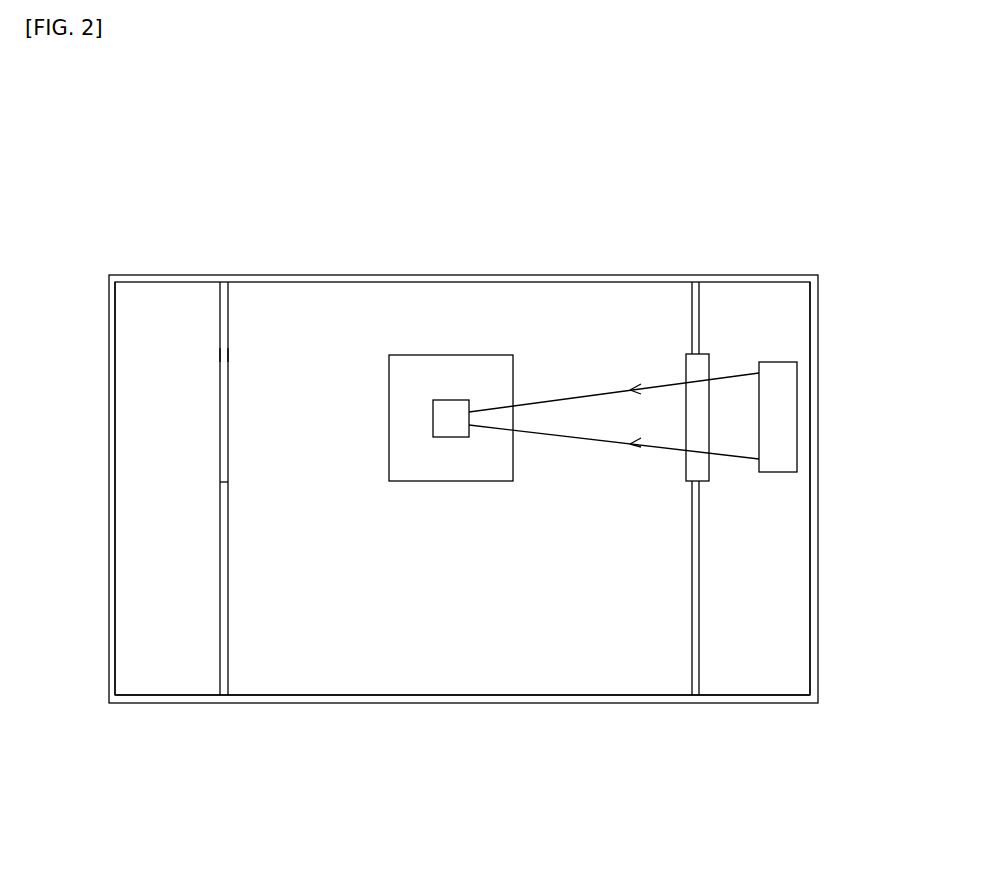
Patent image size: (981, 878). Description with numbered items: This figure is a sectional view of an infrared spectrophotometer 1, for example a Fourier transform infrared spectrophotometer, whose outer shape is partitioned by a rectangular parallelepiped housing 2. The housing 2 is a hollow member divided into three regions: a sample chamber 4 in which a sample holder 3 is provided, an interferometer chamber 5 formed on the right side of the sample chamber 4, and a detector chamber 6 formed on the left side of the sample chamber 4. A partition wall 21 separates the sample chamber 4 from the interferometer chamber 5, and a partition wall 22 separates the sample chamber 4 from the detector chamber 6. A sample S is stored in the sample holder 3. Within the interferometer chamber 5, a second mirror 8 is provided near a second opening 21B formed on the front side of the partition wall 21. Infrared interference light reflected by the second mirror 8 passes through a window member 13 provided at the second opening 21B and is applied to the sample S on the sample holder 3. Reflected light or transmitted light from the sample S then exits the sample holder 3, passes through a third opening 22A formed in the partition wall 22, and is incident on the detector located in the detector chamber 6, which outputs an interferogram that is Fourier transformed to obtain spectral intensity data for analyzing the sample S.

The infrared spectrophotometer 1 is at (463, 448).
The housing 2 is at (415, 275).
The sample holder 3 is at (478, 481).
The sample S is at (437, 437).
The sample chamber 4 is at (484, 683).
The interferometer chamber 5 is at (758, 683).
The detector chamber 6 is at (160, 683).
The second mirror 8 is at (783, 474).
The window member 13 is at (686, 462).
The partition wall 21 is at (690, 630).
The second opening 21B is at (696, 356).
The partition wall 22 is at (228, 578).
The third opening 22A is at (222, 355).